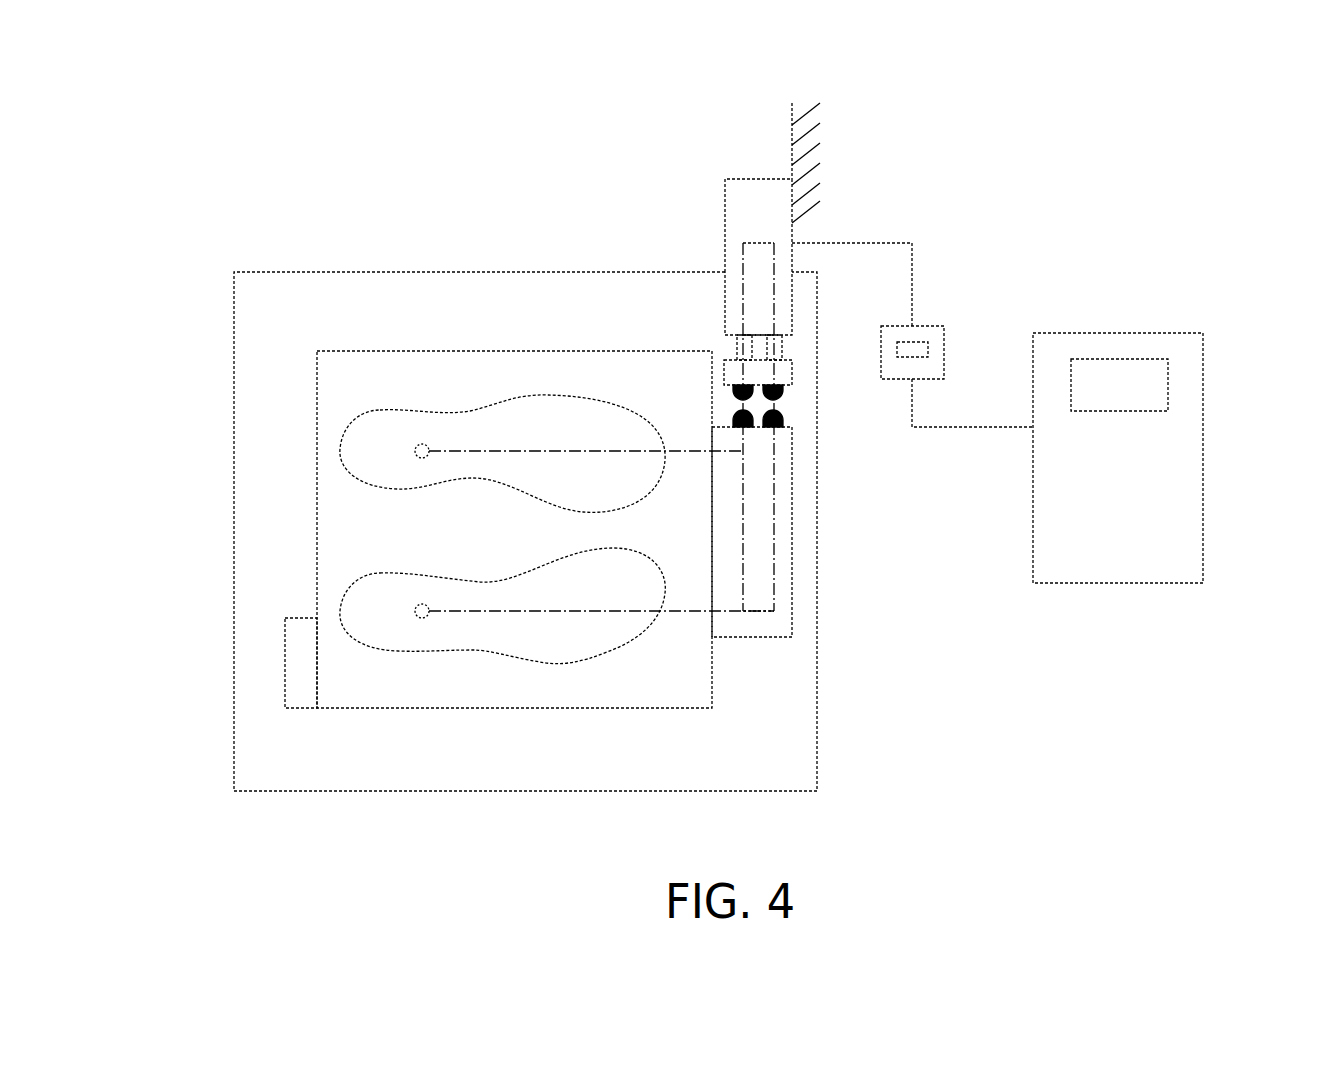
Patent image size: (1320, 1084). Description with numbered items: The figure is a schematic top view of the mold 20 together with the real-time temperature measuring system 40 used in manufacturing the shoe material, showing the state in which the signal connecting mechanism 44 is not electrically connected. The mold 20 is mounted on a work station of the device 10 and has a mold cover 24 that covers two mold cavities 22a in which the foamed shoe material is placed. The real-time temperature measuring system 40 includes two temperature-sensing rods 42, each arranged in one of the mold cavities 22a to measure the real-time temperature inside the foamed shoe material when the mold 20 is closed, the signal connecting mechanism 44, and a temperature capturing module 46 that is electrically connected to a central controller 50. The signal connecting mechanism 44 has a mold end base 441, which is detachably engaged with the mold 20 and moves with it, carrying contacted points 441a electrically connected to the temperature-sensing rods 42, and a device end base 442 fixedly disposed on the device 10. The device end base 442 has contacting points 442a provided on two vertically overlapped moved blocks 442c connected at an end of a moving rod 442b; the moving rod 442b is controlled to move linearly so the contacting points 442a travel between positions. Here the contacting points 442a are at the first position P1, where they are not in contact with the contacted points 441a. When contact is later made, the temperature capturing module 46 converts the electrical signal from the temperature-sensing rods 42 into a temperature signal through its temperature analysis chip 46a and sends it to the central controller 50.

The device 10 is at (785, 125).
The mold 20 is at (310, 425).
The mold cavity 22a is at (563, 665).
The mold cover 24 is at (358, 709).
The real-time temperature measuring system 40 is at (965, 165).
The temperature-sensing rod 42 is at (419, 445).
The signal connecting mechanism 44 is at (880, 431).
The temperature capturing module 46 is at (930, 326).
The temperature analysis chip 46a is at (928, 350).
The central controller 50 is at (1192, 328).
The mold end base 441 is at (793, 594).
The contacted point 441a is at (778, 430).
The device end base 442 is at (725, 190).
The contacting point 442a is at (735, 398).
The moving rod 442b is at (735, 343).
The moved block 442c is at (724, 370).
The first position P1 is at (806, 370).